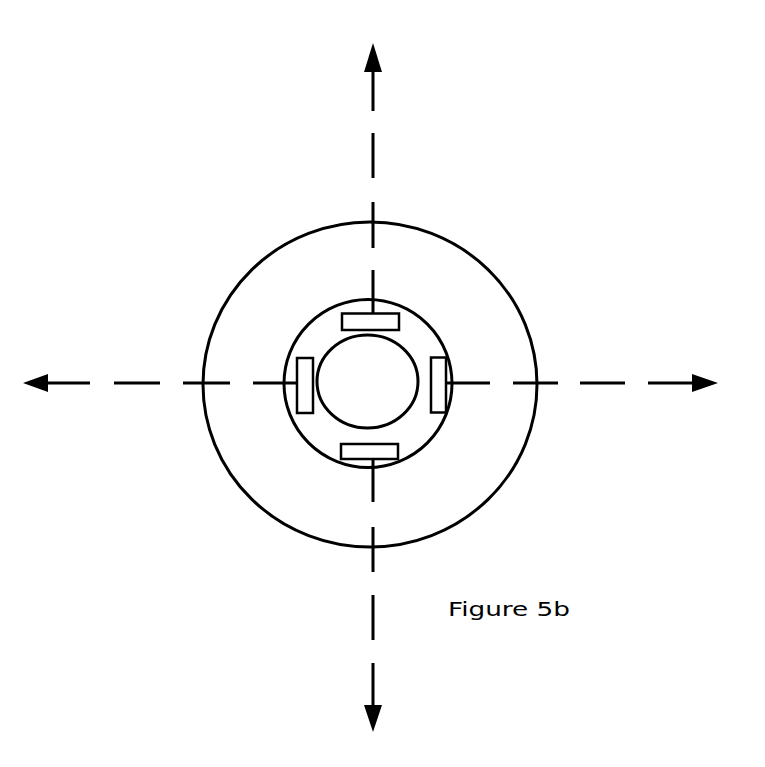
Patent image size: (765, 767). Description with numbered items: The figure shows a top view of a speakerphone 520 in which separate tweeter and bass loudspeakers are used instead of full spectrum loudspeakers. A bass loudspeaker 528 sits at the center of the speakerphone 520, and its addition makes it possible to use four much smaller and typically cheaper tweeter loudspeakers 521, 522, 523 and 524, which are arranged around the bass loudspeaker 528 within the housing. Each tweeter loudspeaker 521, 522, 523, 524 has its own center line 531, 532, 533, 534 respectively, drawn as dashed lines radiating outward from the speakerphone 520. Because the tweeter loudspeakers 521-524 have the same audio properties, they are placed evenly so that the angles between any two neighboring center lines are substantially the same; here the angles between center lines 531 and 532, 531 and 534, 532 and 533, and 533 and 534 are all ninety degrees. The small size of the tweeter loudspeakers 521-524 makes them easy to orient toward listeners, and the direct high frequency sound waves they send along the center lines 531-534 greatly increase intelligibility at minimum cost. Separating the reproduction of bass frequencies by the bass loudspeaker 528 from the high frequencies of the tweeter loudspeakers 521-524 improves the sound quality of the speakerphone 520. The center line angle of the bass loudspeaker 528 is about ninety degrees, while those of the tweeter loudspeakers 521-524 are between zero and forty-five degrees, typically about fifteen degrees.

The speakerphone 520 is at (405, 223).
The tweeter loudspeaker 521 is at (394, 312).
The tweeter loudspeaker 522 is at (307, 414).
The tweeter loudspeaker 523 is at (390, 459).
The tweeter loudspeaker 524 is at (446, 423).
The bass loudspeaker 528 is at (405, 341).
The center line 531 is at (374, 133).
The center line 532 is at (66, 383).
The center line 533 is at (374, 685).
The center line 534 is at (625, 383).